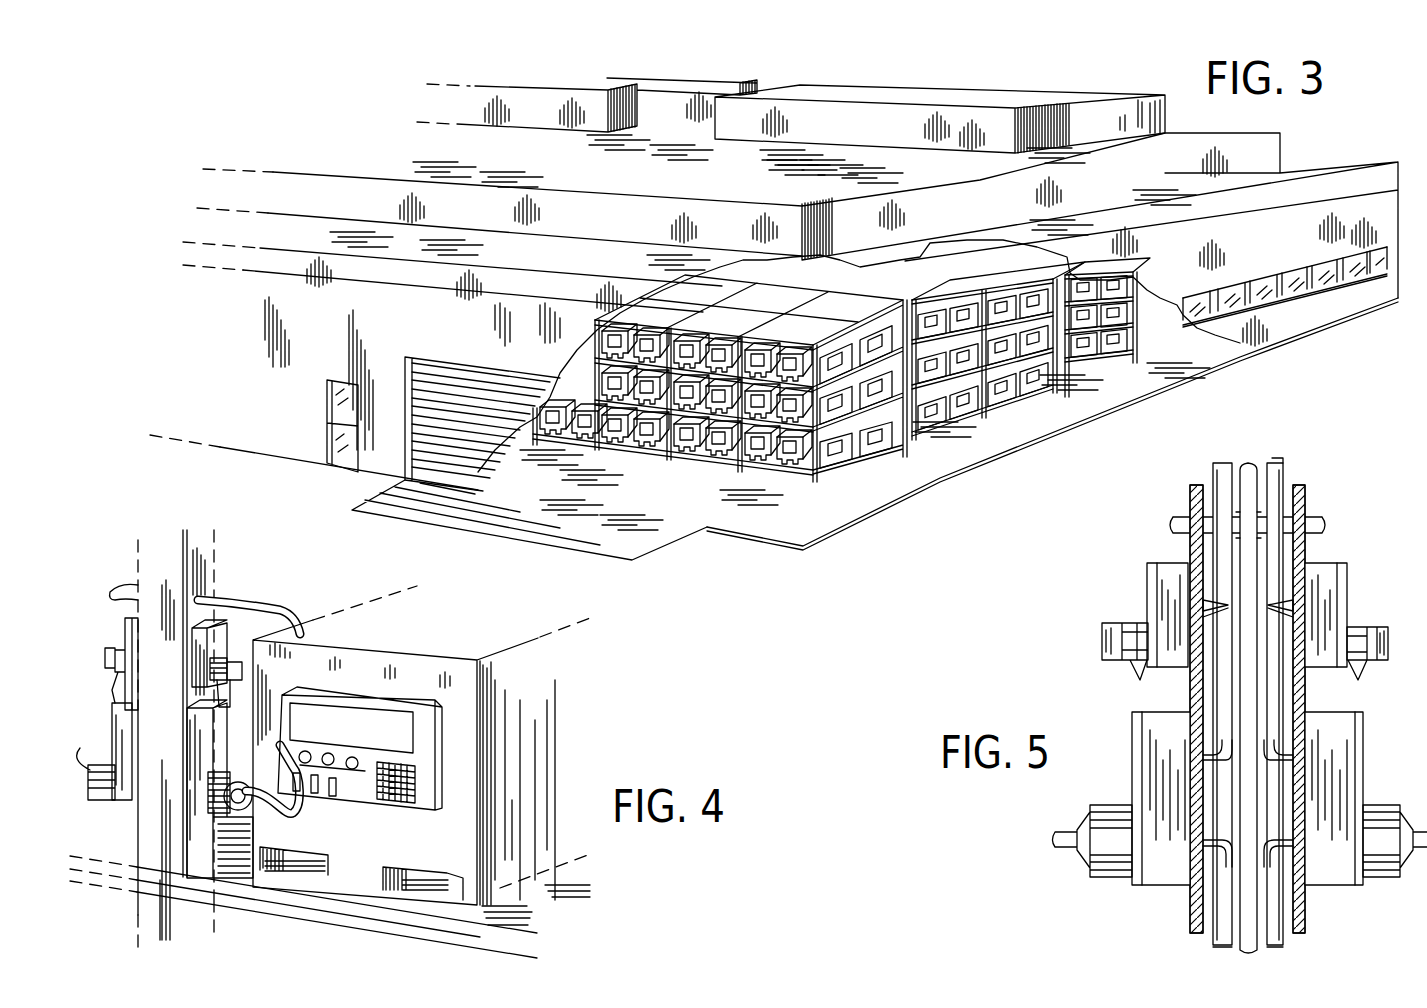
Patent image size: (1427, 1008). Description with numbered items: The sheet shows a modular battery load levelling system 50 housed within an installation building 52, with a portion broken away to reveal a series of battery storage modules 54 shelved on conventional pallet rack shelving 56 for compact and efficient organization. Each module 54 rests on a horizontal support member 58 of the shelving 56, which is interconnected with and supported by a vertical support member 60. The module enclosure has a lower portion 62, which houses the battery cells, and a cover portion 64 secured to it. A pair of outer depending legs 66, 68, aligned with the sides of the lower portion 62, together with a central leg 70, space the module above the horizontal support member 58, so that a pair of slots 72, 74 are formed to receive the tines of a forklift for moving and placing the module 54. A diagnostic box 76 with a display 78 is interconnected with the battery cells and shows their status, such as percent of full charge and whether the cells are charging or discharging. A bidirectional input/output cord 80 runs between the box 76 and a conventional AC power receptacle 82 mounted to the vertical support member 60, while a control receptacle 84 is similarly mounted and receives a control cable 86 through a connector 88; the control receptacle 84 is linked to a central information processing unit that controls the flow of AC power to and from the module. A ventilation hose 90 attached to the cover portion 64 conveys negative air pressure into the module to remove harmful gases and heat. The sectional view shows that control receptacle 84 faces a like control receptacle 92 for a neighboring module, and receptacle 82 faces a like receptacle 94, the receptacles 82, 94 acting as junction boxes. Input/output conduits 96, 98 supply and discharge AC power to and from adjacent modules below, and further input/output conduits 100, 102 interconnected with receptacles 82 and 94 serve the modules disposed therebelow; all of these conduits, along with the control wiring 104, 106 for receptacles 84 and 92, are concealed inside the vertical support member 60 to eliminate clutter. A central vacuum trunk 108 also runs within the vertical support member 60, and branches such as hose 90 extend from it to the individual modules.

In FIG. 3, the modular battery load levelling system 50 is at (1095, 399).
In FIG. 3, the installation building 52 is at (1282, 133).
In FIG. 3, the battery storage module 54 is at (856, 465).
In FIG. 4, the battery storage module 54 is at (416, 750).
In FIG. 3, the pallet rack shelving 56 is at (841, 383).
In FIG. 4, the pallet rack shelving 56 is at (222, 942).
In FIG. 4, the horizontal support member 58 is at (343, 922).
In FIG. 4, the vertical support member 60 is at (160, 605).
In FIG. 5, the vertical support member 60 is at (1299, 486).
In FIG. 4, the lower portion 62 is at (500, 764).
In FIG. 4, the cover portion 64 is at (512, 640).
In FIG. 4, the outer depending leg 66 is at (468, 900).
In FIG. 4, the outer depending leg 68 is at (255, 883).
In FIG. 4, the central leg 70 is at (348, 880).
In FIG. 4, the slot 72 is at (450, 883).
In FIG. 4, the slot 74 is at (292, 862).
In FIG. 4, the diagnostic box 76 is at (333, 693).
In FIG. 4, the display 78 is at (365, 707).
In FIG. 4, the input/output cord 80 is at (250, 815).
In FIG. 5, the input/output cord 80 is at (1414, 832).
In FIG. 4, the AC power receptacle 82 is at (188, 797).
In FIG. 5, the AC power receptacle 82 is at (1330, 712).
In FIG. 4, the control receptacle 84 is at (203, 627).
In FIG. 5, the control receptacle 84 is at (1328, 570).
In FIG. 4, the control cable 86 is at (246, 737).
In FIG. 4, the connector 88 is at (210, 665).
In FIG. 5, the connector 88 is at (1376, 642).
In FIG. 4, the ventilation hose 90 is at (263, 602).
In FIG. 5, the ventilation hose 90 is at (1310, 518).
In FIG. 5, the control receptacle 92 is at (1160, 562).
In FIG. 5, the receptacle 94 is at (1150, 712).
In FIG. 5, the input/output conduit 96 is at (1285, 942).
In FIG. 5, the input/output conduit 98 is at (1215, 940).
In FIG. 5, the input/output conduit 100 is at (1285, 464).
In FIG. 5, the input/output conduit 102 is at (1213, 468).
In FIG. 5, the control receptacle wiring 104 is at (1268, 603).
In FIG. 5, the control receptacle wiring 106 is at (1228, 602).
In FIG. 5, the central vacuum trunk 108 is at (1250, 460).